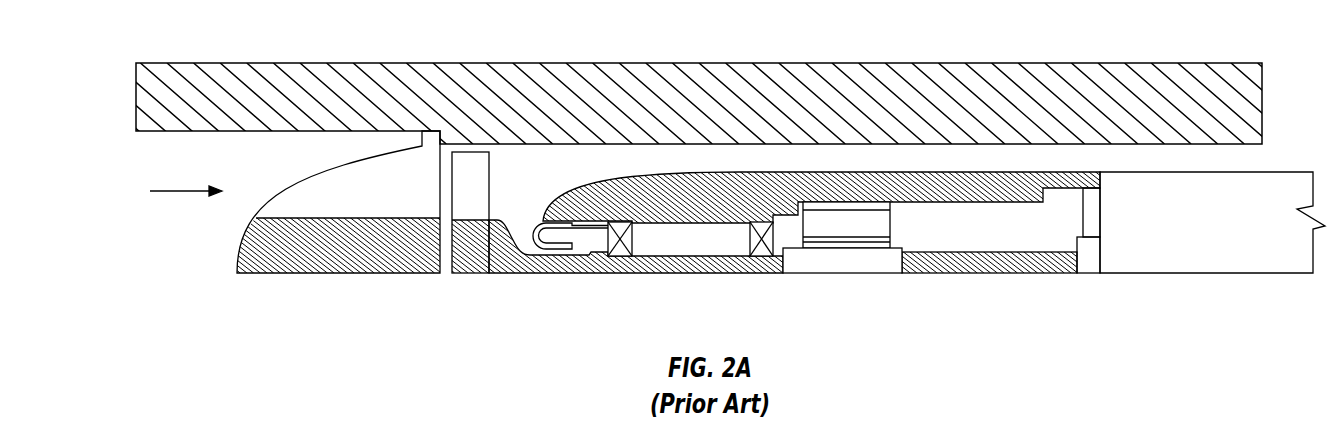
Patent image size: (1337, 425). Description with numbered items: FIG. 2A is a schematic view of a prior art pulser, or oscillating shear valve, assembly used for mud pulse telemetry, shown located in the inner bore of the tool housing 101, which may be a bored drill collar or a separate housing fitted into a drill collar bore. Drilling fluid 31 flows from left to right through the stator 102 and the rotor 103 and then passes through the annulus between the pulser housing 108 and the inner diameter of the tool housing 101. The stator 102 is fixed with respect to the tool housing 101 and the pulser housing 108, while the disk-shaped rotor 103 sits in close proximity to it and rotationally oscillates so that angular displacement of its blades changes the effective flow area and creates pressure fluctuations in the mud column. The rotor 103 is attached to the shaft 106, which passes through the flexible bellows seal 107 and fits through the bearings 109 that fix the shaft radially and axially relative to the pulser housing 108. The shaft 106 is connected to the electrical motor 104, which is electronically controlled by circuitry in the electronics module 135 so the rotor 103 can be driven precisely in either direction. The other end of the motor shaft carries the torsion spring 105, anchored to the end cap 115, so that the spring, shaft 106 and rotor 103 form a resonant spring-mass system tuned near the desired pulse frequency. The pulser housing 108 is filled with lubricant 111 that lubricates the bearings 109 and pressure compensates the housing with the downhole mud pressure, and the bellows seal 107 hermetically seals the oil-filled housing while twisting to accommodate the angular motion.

The drilling fluid 31 is at (168, 193).
The tool housing 101 is at (699, 83).
The stator 102 is at (660, 202).
The rotor 103 is at (660, 142).
The electrical motor 104 is at (859, 210).
The torsion spring 105 is at (660, 221).
The shaft 106 is at (660, 212).
The flexible bellows seal 107 is at (604, 198).
The pulser housing 108 is at (660, 210).
The bearings 109 is at (725, 230).
The lubricant 111 is at (955, 240).
The end cap 115 is at (1123, 212).
The electronics module 135 is at (1216, 201).